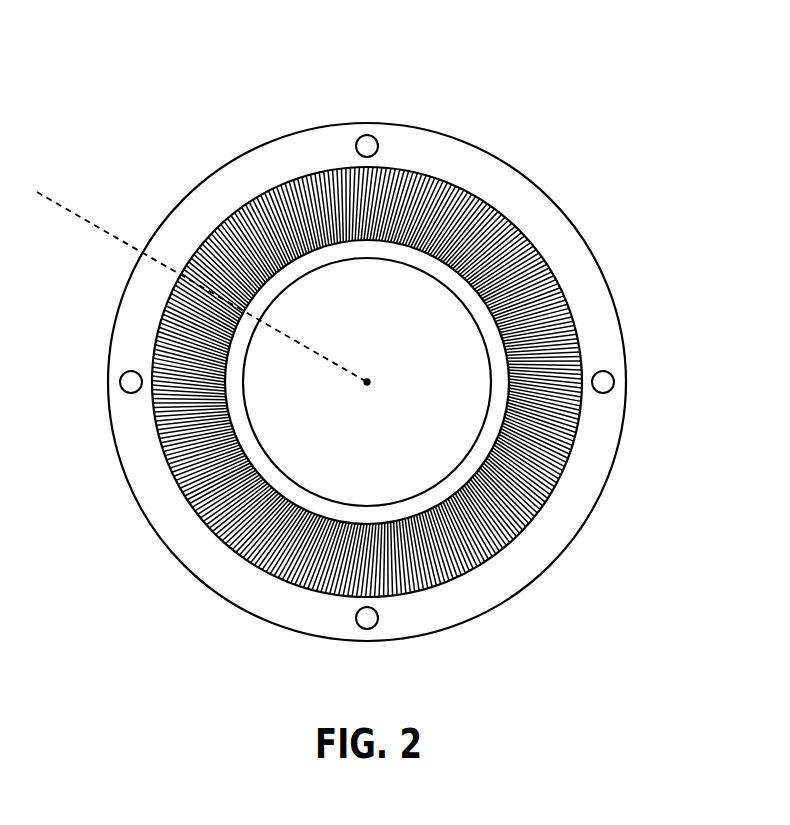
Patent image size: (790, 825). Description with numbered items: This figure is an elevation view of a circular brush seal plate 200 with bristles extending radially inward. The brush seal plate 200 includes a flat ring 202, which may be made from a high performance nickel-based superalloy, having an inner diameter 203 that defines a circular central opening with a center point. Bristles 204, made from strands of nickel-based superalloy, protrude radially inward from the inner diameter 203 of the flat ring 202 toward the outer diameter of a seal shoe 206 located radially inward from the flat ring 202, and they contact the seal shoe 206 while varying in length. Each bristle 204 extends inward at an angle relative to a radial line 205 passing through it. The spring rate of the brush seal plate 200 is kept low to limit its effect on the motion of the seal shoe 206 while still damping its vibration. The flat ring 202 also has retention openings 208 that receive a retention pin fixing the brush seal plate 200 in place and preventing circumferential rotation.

The brush seal plate 200 is at (190, 106).
The flat ring 202 is at (414, 148).
The inner diameter 203 is at (338, 166).
The bristles 204 is at (486, 212).
The radial line 205 is at (68, 208).
The seal shoe 206 is at (460, 283).
The retention openings 208 is at (605, 379).